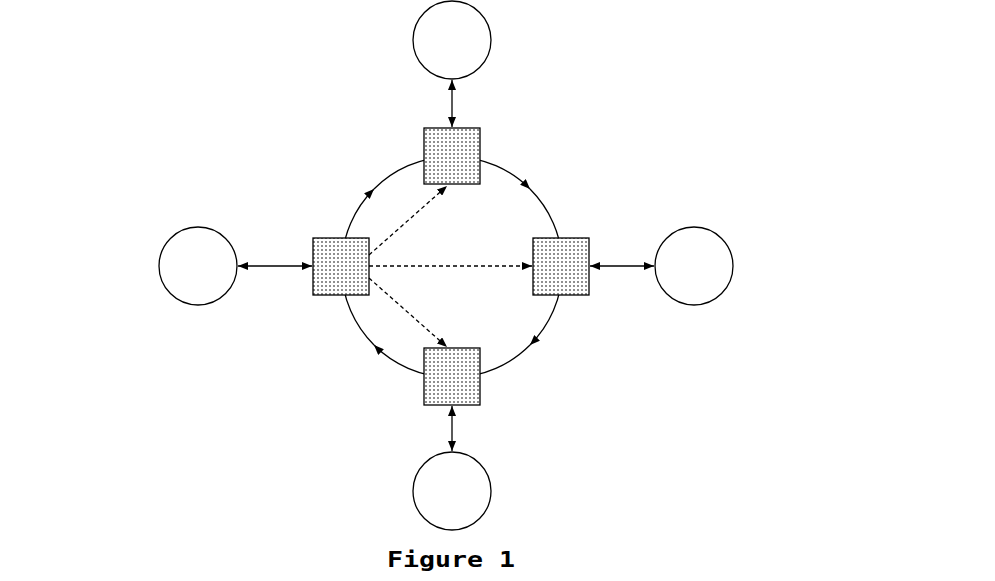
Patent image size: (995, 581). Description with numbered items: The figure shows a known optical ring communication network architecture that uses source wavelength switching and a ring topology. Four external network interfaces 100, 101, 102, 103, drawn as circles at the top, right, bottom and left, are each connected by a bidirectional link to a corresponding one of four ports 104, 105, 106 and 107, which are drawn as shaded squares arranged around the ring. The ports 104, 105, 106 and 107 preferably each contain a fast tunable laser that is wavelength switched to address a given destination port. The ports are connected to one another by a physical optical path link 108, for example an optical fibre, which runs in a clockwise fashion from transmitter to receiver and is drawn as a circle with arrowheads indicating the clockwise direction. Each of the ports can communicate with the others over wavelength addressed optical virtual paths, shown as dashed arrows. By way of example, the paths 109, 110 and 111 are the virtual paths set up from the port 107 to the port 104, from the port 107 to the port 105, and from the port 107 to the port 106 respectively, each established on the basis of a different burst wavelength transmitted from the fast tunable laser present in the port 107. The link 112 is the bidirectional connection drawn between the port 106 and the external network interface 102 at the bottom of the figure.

The external network interface 100 is at (483, 15).
The external network interface 101 is at (726, 241).
The external network interface 102 is at (412, 490).
The external network interface 103 is at (158, 266).
The port 104 is at (421, 142).
The port 105 is at (577, 299).
The port 106 is at (483, 392).
The port 107 is at (323, 298).
The physical optical path link 108 is at (516, 172).
The wavelength addressed optical virtual path 109 is at (401, 209).
The wavelength addressed optical virtual path 110 is at (452, 264).
The wavelength addressed optical virtual path 111 is at (409, 323).
The bidirectional link 112 is at (455, 431).